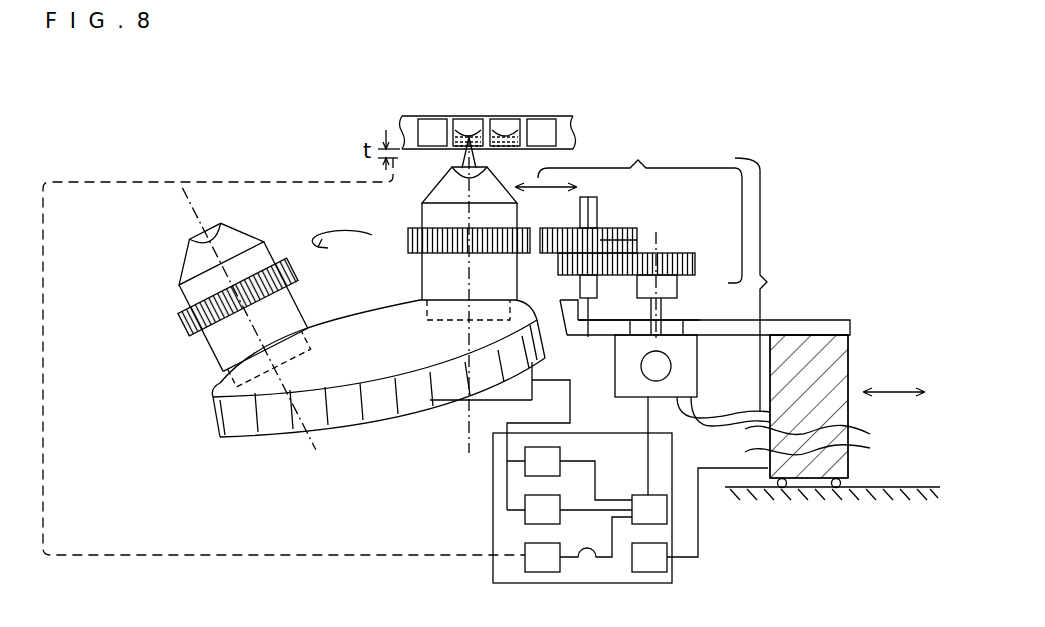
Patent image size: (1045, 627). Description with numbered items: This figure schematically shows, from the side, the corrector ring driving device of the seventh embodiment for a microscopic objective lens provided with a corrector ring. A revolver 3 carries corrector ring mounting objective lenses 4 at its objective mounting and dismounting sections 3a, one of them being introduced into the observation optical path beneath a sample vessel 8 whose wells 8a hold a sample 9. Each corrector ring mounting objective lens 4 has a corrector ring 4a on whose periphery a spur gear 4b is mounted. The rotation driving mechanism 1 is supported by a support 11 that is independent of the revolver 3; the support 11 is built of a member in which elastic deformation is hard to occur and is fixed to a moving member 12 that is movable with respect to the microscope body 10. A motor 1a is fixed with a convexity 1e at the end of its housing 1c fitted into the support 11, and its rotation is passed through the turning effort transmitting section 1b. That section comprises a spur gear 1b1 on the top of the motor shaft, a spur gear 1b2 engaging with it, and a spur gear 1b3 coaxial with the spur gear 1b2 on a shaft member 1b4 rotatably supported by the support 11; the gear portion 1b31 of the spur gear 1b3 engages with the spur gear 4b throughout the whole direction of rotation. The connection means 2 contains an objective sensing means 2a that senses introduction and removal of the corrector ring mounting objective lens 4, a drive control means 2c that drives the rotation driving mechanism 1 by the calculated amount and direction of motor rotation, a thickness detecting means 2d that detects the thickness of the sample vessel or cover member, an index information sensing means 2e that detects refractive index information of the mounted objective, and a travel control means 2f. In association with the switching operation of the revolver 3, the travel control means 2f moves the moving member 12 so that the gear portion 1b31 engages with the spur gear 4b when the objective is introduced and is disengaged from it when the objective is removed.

The rotation driving mechanism 1 is at (763, 285).
The motor 1a is at (641, 367).
The turning effort transmitting section 1b is at (640, 206).
The spur gear 1b1 is at (666, 254).
The spur gear 1b2 is at (562, 302).
The spur gear 1b3 is at (625, 240).
The gear portion 1b31 is at (628, 254).
The shaft member 1b4 is at (581, 212).
The housing 1c is at (690, 366).
The convexity 1e is at (688, 321).
The connection means 2 is at (493, 487).
The objective sensing means 2a is at (542, 509).
The drive control means 2c is at (649, 509).
The thickness detecting means 2d is at (542, 557).
The index information sensing means 2e is at (542, 461).
The travel control means 2f is at (649, 557).
The revolver 3 is at (215, 388).
The objective mounting and dismounting section 3a is at (432, 316).
The corrector ring mounting objective lens 4 is at (423, 203).
The corrector ring 4a is at (297, 278).
The spur gear 4b is at (406, 236).
The sample vessel 8 is at (566, 118).
The well 8a is at (443, 132).
The sample 9 is at (474, 133).
The microscope body 10 is at (882, 489).
The support 11 is at (780, 323).
The moving member 12 is at (843, 361).